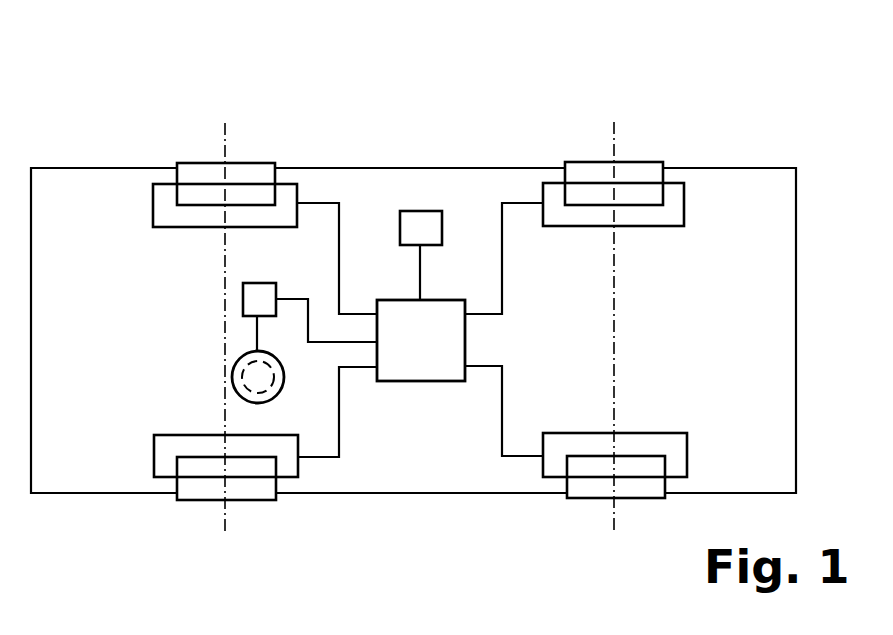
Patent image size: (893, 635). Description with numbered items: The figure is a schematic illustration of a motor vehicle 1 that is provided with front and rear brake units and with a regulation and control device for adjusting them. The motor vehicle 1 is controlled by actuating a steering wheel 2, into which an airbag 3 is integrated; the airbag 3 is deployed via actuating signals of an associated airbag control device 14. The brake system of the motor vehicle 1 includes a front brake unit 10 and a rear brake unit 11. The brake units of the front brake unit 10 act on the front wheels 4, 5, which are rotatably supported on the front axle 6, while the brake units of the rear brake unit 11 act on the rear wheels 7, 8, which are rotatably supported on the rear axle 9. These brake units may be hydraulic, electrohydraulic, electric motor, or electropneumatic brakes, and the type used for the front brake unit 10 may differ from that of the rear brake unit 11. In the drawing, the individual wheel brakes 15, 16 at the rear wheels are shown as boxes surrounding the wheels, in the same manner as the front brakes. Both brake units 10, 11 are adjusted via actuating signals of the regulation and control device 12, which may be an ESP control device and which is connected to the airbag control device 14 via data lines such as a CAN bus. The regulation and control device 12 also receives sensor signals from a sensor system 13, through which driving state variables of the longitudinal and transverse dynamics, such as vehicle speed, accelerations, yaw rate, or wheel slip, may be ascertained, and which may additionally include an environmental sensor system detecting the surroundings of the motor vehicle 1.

The motor vehicle 1 is at (147, 76).
The steering wheel 2 is at (245, 358).
The airbag 3 is at (243, 377).
The front wheel 4 is at (202, 492).
The front wheel 5 is at (200, 170).
The front axle 6 is at (230, 120).
The rear wheel 7 is at (590, 490).
The rear wheel 8 is at (587, 170).
The rear axle 9 is at (617, 128).
The front brake unit 10 is at (304, 196).
The rear brake unit 11 is at (692, 195).
The regulation and control device 12 is at (420, 372).
The sensor system 13 is at (420, 217).
The airbag control device 14 is at (248, 302).
The rear left wheel brake 15 is at (266, 422).
The rear right wheel brake 16 is at (576, 421).